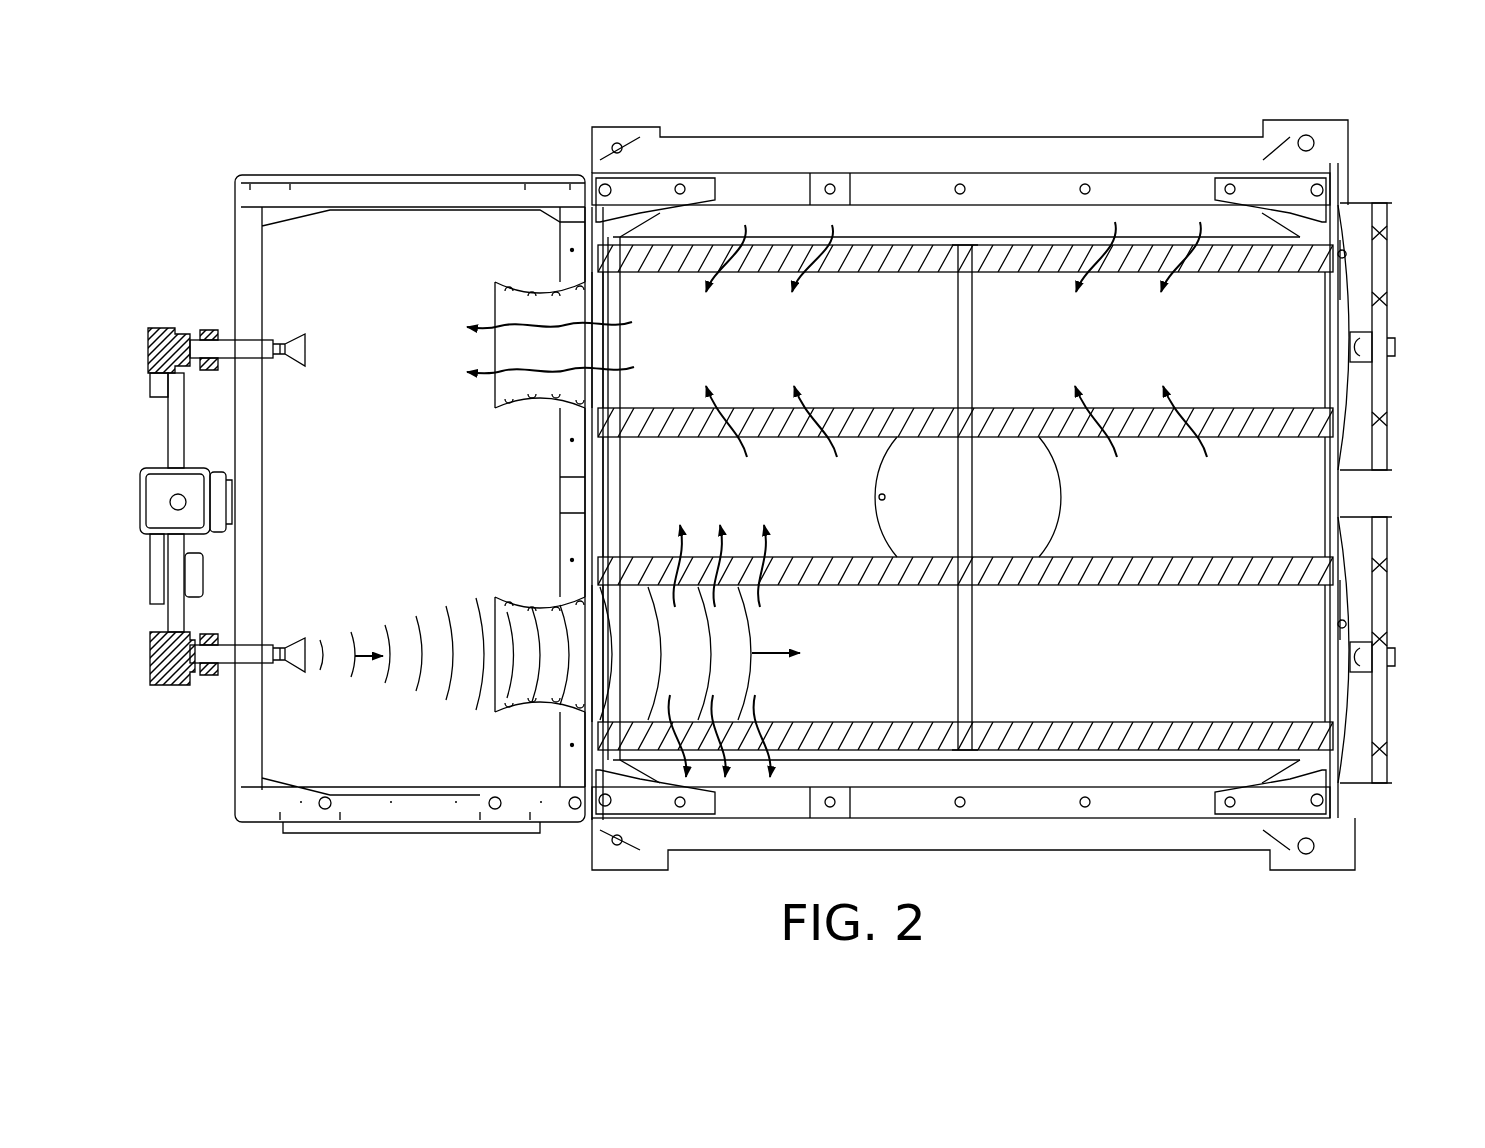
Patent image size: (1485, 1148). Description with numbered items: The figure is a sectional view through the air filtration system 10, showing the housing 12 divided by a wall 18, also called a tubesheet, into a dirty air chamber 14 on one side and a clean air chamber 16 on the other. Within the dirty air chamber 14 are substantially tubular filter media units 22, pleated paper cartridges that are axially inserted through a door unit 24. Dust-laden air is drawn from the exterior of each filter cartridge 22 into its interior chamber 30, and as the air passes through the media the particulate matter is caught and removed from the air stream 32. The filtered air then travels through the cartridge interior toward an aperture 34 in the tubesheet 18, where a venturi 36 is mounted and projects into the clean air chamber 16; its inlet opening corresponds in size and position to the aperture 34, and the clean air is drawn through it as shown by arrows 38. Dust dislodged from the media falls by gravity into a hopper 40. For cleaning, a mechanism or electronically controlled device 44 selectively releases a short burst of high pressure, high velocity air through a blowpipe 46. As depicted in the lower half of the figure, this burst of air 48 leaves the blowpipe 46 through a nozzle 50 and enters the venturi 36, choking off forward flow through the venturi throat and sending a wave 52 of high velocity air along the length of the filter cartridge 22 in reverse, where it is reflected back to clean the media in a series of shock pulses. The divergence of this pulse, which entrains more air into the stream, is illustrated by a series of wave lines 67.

The air filtration system 10 is at (230, 118).
The housing 12 is at (757, 160).
The dirty air chamber 14 is at (870, 218).
The clean air chamber 16 is at (368, 248).
The wall 18 is at (560, 245).
The tubular filter media unit 22 is at (1268, 264).
The door unit 24 is at (1388, 302).
The interior chamber 30 is at (1021, 346).
The air stream 32 is at (792, 291).
The aperture 34 is at (594, 315).
The venturi 36 is at (493, 283).
The arrows 38 is at (472, 323).
The hopper 40 is at (1042, 495).
The mechanism or electronically controlled device 44 is at (160, 326).
The blowpipe 46 is at (246, 658).
The burst of high pressure, high velocity air 48 is at (360, 652).
The nozzle 50 is at (290, 638).
The wave of high velocity air 52 is at (760, 652).
The wave lines 67 is at (421, 626).